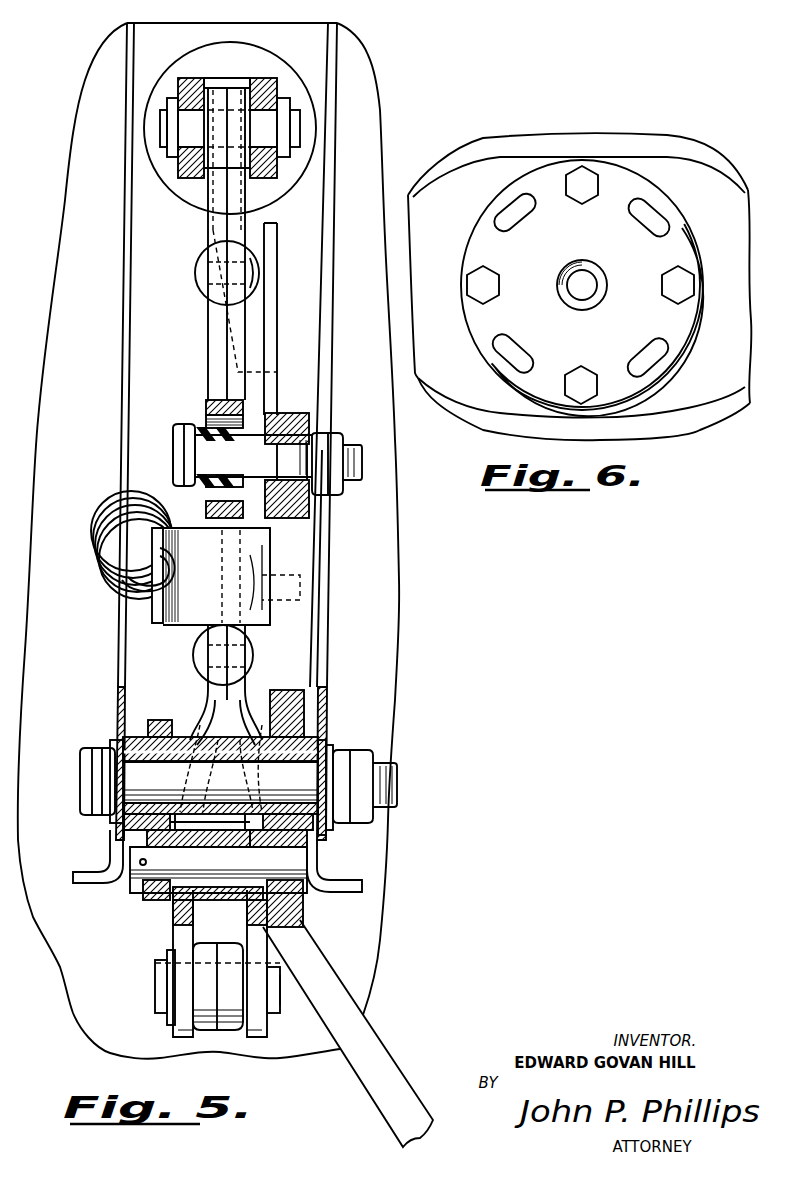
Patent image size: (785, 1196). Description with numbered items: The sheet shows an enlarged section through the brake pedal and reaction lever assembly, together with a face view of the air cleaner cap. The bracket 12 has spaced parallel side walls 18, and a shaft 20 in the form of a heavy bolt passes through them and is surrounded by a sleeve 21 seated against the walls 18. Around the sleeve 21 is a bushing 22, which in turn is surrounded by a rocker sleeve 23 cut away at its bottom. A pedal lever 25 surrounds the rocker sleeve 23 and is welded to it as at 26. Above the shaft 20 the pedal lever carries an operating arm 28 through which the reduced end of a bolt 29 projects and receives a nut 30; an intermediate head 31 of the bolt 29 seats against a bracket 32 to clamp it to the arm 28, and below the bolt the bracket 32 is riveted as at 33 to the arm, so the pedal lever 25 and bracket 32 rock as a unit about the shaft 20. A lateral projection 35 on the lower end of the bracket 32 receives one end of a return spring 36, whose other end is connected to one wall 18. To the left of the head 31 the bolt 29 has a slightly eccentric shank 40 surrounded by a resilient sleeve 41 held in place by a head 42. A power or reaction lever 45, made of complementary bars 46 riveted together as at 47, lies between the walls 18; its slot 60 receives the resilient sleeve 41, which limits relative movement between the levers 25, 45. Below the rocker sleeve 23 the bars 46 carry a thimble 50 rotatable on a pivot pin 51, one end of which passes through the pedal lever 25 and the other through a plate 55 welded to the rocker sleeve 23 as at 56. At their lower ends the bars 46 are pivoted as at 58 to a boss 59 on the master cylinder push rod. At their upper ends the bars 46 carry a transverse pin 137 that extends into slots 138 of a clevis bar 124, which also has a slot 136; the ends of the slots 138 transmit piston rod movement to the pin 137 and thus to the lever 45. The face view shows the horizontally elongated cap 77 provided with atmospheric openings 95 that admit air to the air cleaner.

In FIG. 5, the bracket 12 is at (327, 618).
In FIG. 5, the side walls 18 is at (117, 660).
In FIG. 5, the shaft 20 is at (312, 778).
In FIG. 5, the sleeve 21 is at (296, 760).
In FIG. 5, the bushing 22 is at (190, 762).
In FIG. 5, the rocker sleeve 23 is at (198, 742).
In FIG. 5, the pedal lever 25 is at (345, 995).
In FIG. 5, the weld 26 is at (312, 735).
In FIG. 5, the operating arm 28 is at (302, 545).
In FIG. 5, the bolt 29 is at (290, 445).
In FIG. 5, the nut 30 is at (338, 444).
In FIG. 5, the intermediate head 31 is at (236, 461).
In FIG. 5, the bracket 32 is at (278, 366).
In FIG. 5, the rivet 33 is at (310, 582).
In FIG. 5, the lateral projection 35 is at (188, 622).
In FIG. 5, the return spring 36 is at (105, 575).
In FIG. 5, the shank 40 is at (206, 462).
In FIG. 5, the resilient sleeve 41 is at (204, 430).
In FIG. 5, the head 42 is at (180, 440).
In FIG. 5, the power or reaction lever 45 is at (200, 338).
In FIG. 5, the complementary bars 46 is at (238, 362).
In FIG. 5, the rivet 47 is at (196, 273).
In FIG. 5, the thimble 50 is at (240, 905).
In FIG. 5, the pivot pin 51 is at (130, 893).
In FIG. 5, the plate 55 is at (148, 925).
In FIG. 5, the weld 56 is at (148, 738).
In FIG. 5, the pivot 58 is at (153, 990).
In FIG. 5, the boss 59 is at (232, 1035).
In FIG. 5, the slot 60 is at (222, 400).
In FIG. 6, the cap 77 is at (680, 170).
In FIG. 6, the atmospheric openings 95 is at (645, 230).
In FIG. 5, the clevis bar 124 is at (186, 80).
In FIG. 5, the slot 136 is at (268, 80).
In FIG. 5, the transverse pin 137 is at (190, 120).
In FIG. 5, the slots 138 is at (252, 182).